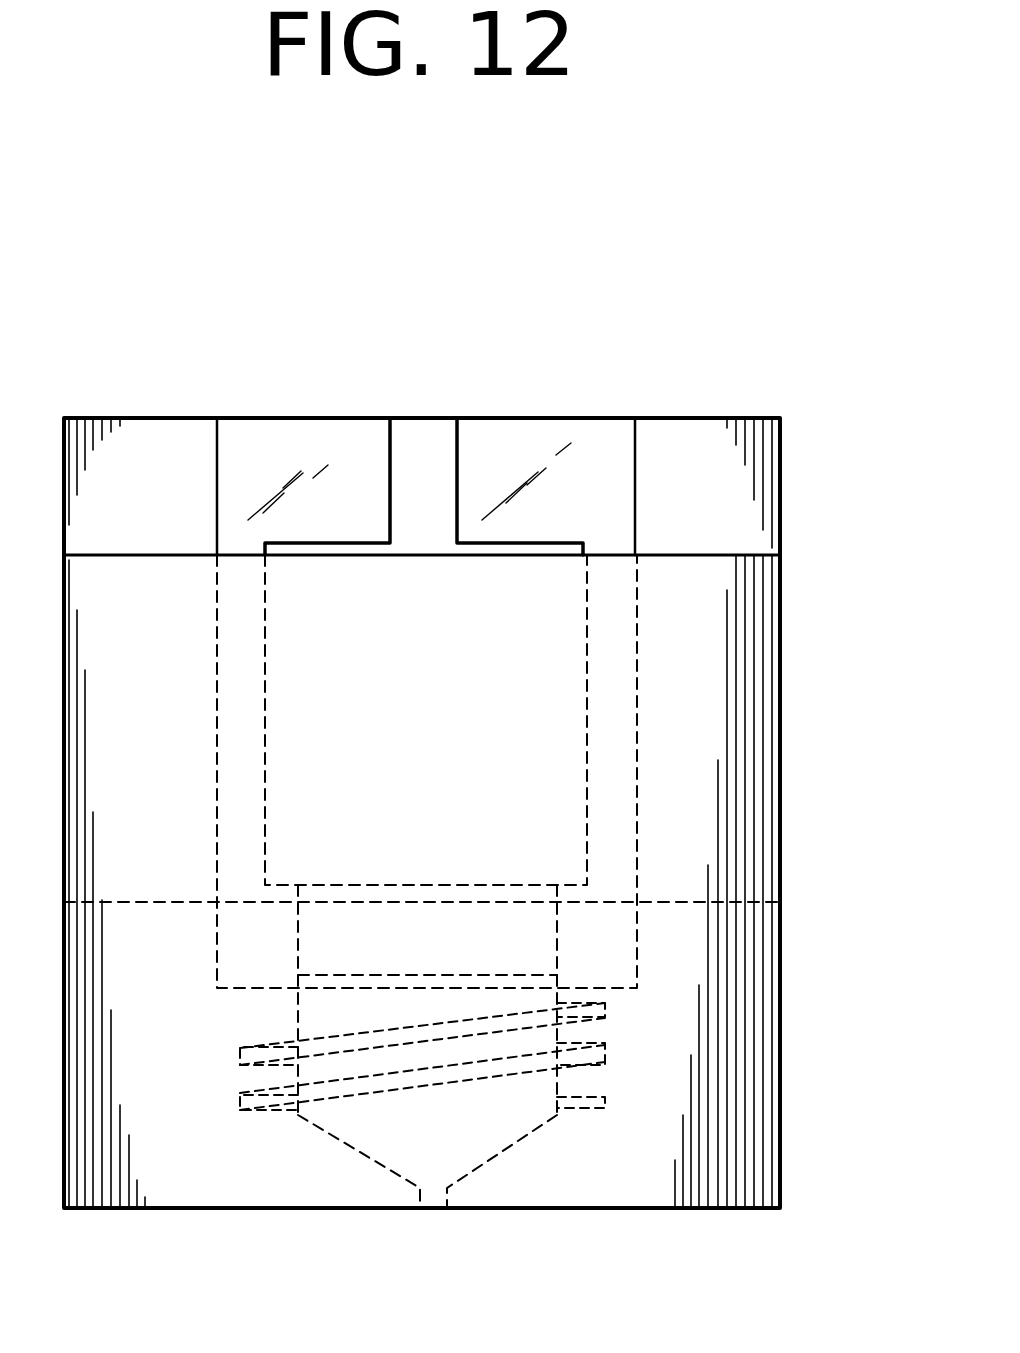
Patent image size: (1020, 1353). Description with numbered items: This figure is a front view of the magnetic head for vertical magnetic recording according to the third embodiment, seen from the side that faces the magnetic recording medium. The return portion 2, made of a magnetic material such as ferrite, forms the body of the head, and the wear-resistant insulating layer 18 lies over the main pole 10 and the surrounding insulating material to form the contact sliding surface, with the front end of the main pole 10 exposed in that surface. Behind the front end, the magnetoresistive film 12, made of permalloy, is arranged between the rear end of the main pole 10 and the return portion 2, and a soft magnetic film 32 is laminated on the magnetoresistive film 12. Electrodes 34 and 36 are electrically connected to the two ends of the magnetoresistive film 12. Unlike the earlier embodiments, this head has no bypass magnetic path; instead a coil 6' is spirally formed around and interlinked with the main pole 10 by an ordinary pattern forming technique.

The return portion 2 is at (762, 463).
The electrode 36 is at (297, 426).
The electrode 34 is at (550, 426).
The wear-resistant insulating layer 18 is at (762, 666).
The magnetoresistive film 12 is at (372, 885).
The soft magnetic film 32 is at (427, 1000).
The coil 6' is at (460, 1056).
The main pole 10 is at (375, 1162).